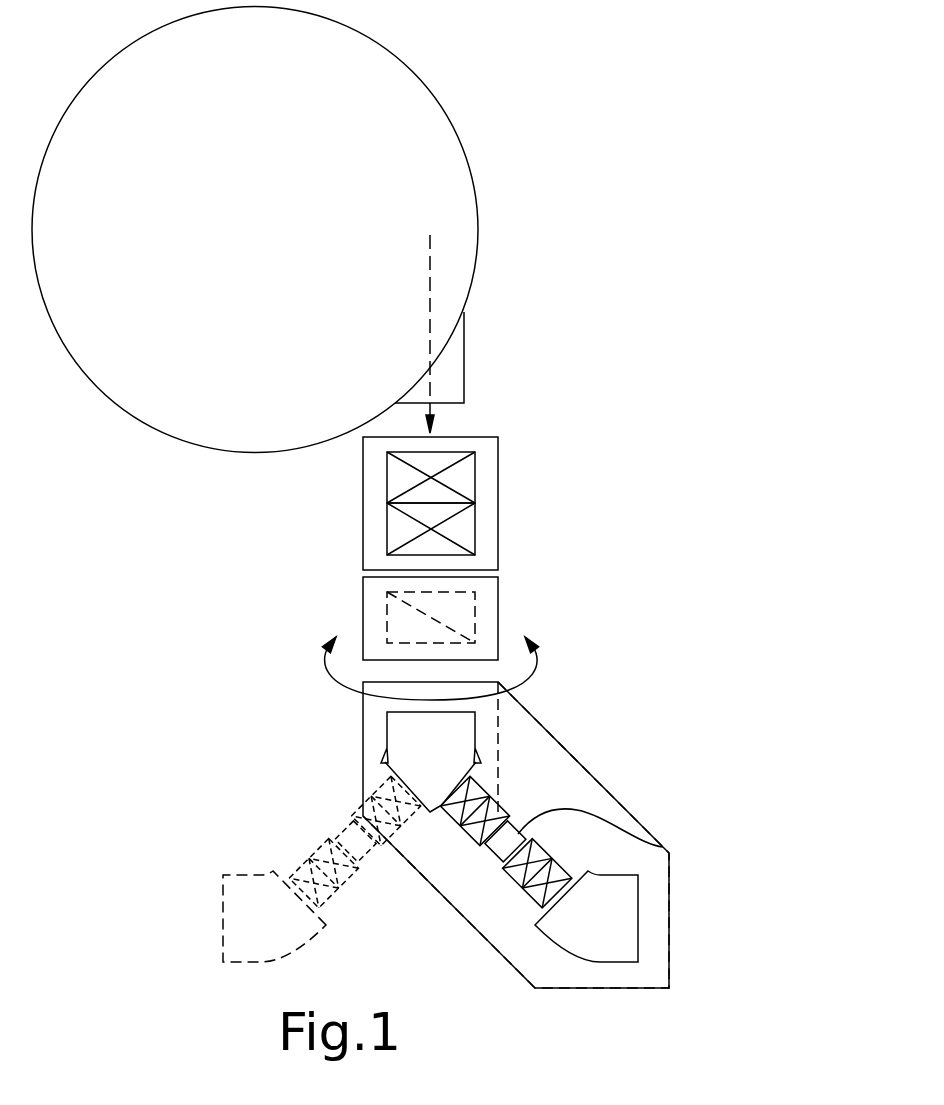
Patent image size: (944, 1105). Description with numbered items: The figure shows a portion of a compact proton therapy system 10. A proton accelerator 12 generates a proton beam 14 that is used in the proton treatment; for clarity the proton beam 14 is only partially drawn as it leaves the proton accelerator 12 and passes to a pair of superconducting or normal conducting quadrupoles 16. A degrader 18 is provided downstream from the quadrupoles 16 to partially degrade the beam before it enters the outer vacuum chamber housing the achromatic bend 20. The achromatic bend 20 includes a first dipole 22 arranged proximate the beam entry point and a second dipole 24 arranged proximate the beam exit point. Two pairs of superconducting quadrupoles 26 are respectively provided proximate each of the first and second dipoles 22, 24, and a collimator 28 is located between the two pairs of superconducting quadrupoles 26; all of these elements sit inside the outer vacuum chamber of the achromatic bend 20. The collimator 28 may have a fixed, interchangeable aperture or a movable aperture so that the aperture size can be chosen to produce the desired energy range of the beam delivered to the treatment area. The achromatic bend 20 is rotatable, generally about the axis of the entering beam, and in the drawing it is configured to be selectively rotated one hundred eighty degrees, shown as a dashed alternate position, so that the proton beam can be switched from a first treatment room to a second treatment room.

The compact proton therapy system 10 is at (566, 272).
The proton accelerator 12 is at (352, 110).
The proton beam 14 is at (430, 385).
The pair of superconducting or normal conducting quadrupoles 16 is at (475, 475).
The degrader 18 is at (483, 623).
The achromatic bend 20 is at (592, 770).
The first dipole 22 is at (388, 735).
The second dipole 24 is at (640, 927).
The pairs of superconducting quadrupoles 26 is at (500, 806).
The collimator 28 is at (663, 848).